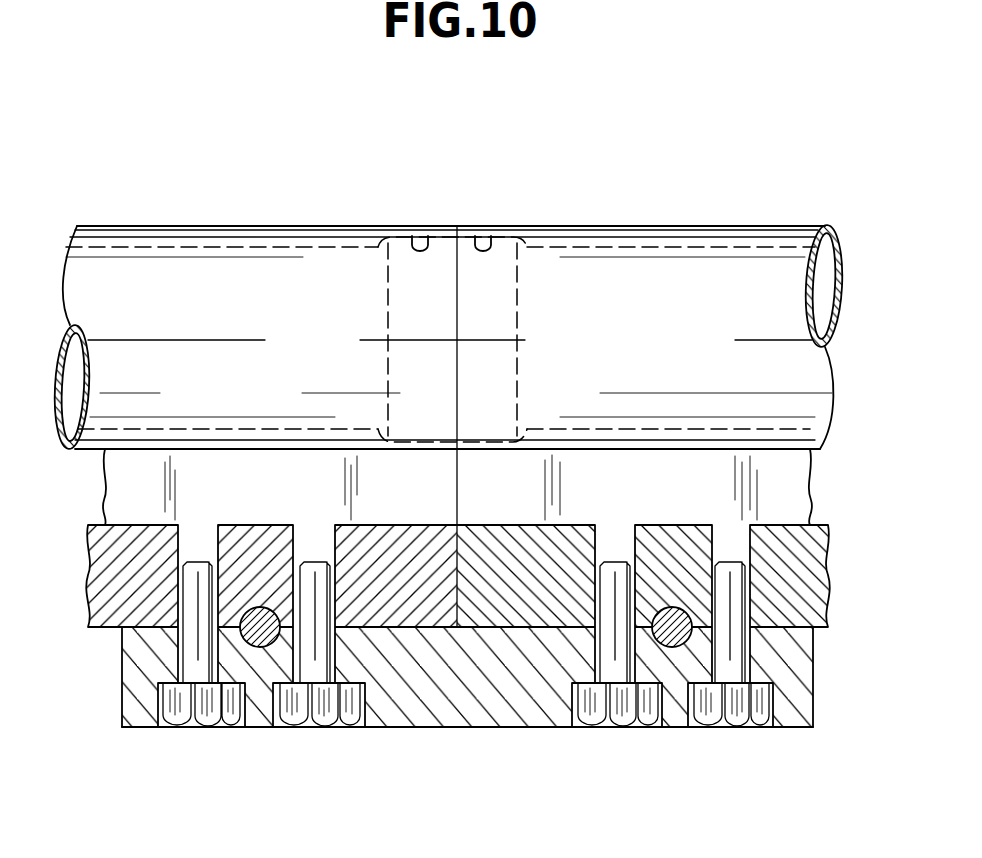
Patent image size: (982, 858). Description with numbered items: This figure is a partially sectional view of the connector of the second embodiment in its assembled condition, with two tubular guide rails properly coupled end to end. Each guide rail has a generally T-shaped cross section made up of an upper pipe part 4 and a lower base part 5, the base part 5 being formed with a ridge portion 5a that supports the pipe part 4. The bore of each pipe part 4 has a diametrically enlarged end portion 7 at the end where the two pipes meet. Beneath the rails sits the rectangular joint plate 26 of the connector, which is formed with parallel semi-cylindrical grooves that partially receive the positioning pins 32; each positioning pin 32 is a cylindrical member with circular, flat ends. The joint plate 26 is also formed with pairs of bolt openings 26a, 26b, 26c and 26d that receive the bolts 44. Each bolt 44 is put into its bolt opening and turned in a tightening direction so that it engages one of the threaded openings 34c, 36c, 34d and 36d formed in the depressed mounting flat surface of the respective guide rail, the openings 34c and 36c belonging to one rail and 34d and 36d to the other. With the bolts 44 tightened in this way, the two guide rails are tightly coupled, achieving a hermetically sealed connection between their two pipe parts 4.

The pipe part 4 is at (321, 258).
The diametrically enlarged end portion 7 is at (420, 240).
The ridge portion 5a is at (793, 487).
The base part 5 is at (830, 594).
The joint plate 26 is at (458, 715).
The threaded opening 34c is at (256, 517).
The threaded opening 36c is at (315, 535).
The threaded opening 34d is at (672, 517).
The threaded opening 36d is at (617, 535).
The positioning pin 32 is at (262, 622).
The bolt opening 26a is at (252, 700).
The bolt opening 26c is at (195, 652).
The bolt opening 26b is at (712, 699).
The bolt opening 26d is at (600, 707).
The bolt 44 is at (318, 716).